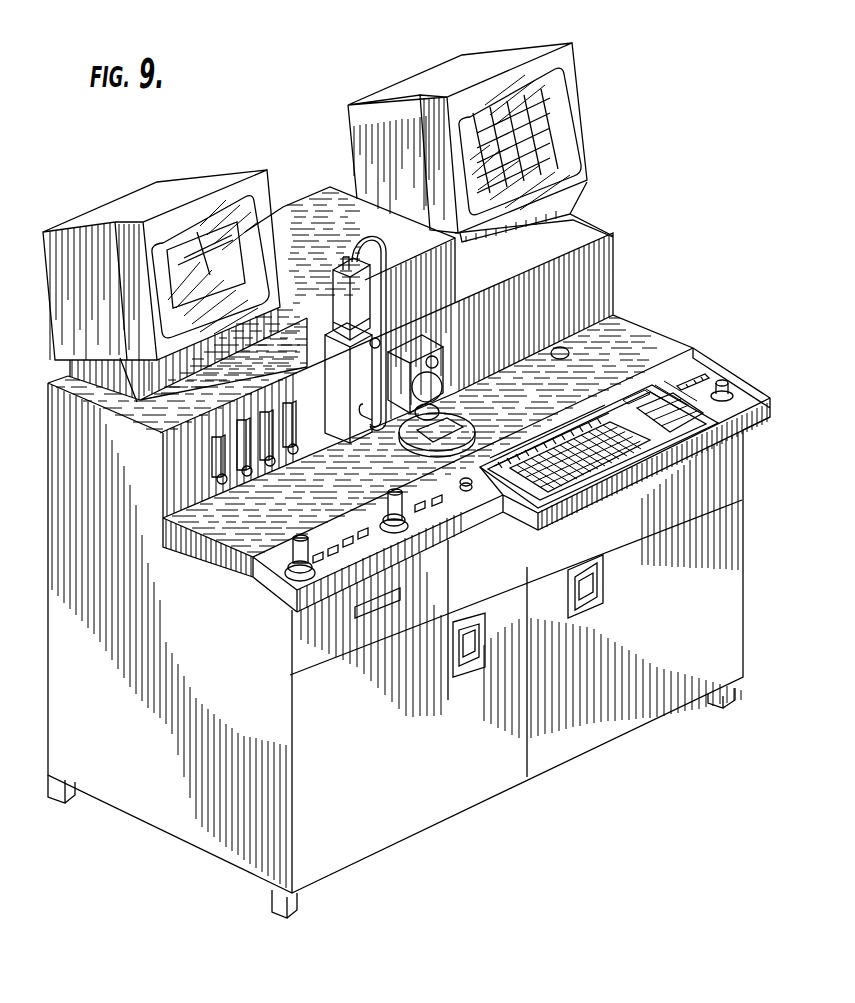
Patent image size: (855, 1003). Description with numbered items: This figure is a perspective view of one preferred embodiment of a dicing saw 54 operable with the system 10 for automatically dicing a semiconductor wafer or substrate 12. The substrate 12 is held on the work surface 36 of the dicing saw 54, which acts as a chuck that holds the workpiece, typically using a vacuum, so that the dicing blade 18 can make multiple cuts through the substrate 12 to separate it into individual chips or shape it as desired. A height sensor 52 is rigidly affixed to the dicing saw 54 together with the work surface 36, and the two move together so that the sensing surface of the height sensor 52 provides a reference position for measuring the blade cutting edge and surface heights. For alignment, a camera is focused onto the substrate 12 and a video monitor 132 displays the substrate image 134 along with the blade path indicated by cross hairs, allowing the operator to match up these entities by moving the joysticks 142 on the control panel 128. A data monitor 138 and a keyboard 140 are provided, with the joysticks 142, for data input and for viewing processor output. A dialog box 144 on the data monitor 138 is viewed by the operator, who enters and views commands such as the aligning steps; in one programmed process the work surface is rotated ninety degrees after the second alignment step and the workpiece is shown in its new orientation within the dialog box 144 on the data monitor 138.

The method and system 10 is at (633, 225).
The substrate 12 is at (458, 422).
The dicing blade 18 is at (467, 393).
The work surface 36 is at (264, 446).
The height sensor 52 is at (565, 348).
The dicing saw 54 is at (667, 322).
The control panel 128 is at (473, 528).
The video monitor 132 is at (107, 213).
The substrate image 134 is at (187, 293).
The data monitor 138 is at (567, 117).
The keyboard 140 is at (567, 475).
The joysticks 142 is at (292, 565).
The dialog box 144 is at (518, 90).